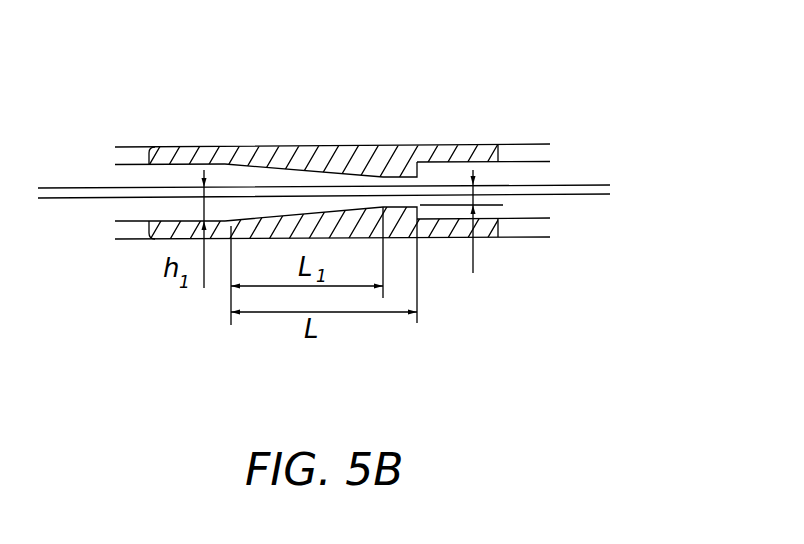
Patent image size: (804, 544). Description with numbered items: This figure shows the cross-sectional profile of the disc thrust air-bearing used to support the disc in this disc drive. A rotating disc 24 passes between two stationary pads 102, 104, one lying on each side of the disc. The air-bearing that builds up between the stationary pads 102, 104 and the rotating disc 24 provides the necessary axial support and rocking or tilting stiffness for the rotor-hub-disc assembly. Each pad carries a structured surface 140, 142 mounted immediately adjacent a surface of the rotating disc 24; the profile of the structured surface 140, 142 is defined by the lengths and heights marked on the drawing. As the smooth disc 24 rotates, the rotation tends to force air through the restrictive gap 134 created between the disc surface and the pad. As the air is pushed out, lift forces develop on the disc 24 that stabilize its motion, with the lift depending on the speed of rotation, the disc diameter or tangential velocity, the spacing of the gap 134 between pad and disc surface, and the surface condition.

The stationary pad 104 is at (178, 145).
The structured surface 140 is at (275, 168).
The disc 24 is at (590, 184).
The stationary pad 102 is at (158, 240).
The structured surface 142 is at (332, 210).
The restrictive gap 134 is at (476, 249).